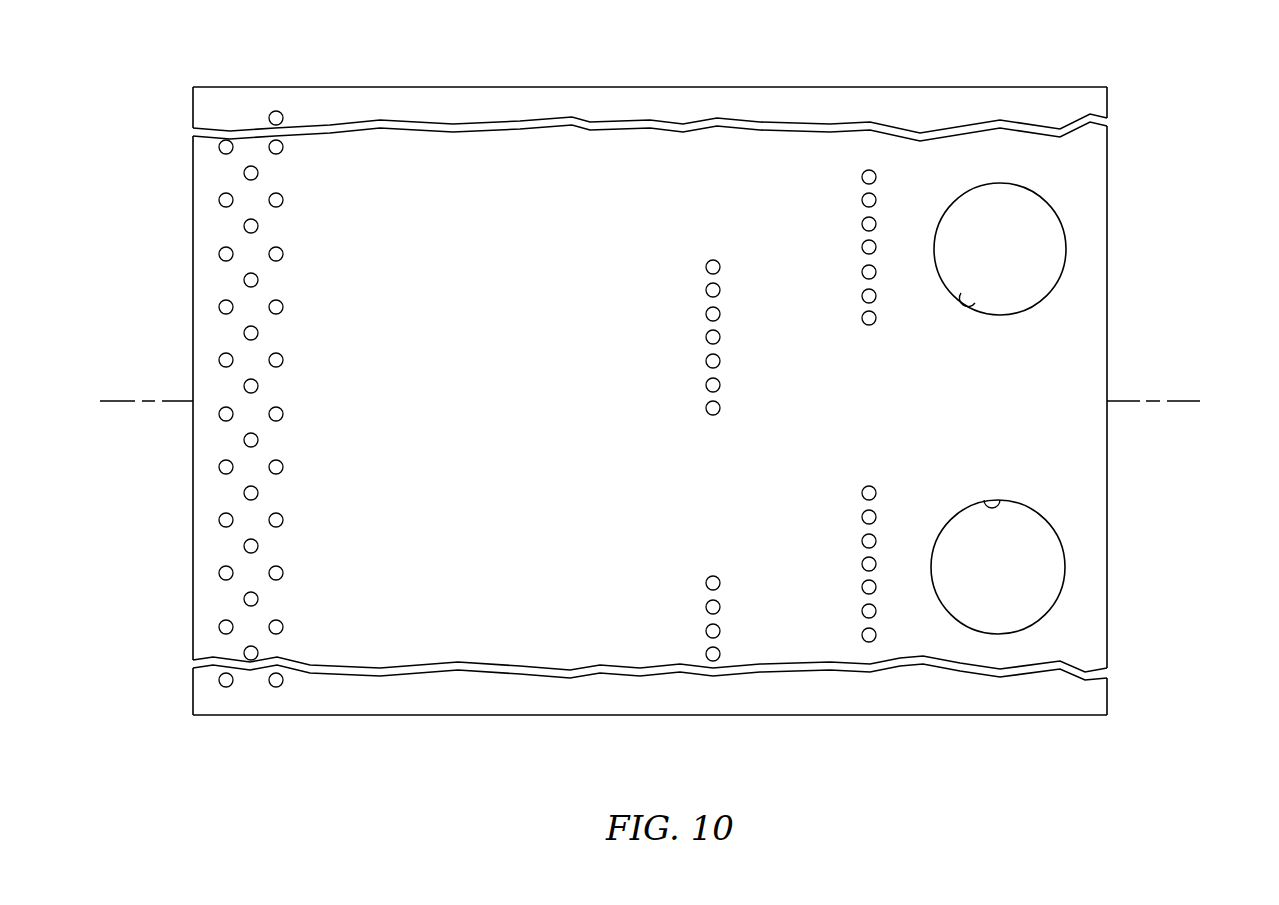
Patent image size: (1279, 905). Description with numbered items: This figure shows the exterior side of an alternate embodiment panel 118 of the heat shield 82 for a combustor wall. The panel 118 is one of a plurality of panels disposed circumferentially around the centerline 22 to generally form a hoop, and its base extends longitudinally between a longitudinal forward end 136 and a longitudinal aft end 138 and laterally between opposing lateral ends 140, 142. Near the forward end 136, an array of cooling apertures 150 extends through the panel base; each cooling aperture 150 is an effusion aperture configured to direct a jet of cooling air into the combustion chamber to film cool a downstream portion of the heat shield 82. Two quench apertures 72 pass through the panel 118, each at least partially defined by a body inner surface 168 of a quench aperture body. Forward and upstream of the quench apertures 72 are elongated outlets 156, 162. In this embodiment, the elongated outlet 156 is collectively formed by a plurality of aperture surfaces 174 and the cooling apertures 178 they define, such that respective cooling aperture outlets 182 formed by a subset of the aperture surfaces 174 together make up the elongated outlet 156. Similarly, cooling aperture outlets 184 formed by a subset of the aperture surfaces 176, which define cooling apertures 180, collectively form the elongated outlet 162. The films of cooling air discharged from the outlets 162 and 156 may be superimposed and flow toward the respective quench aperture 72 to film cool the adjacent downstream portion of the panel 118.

The heat shield 82 is at (671, 409).
The panel 118 is at (1147, 118).
The lateral end 142 is at (370, 87).
The lateral end 140 is at (362, 715).
The longitudinal forward end 136 is at (193, 227).
The longitudinal aft end 138 is at (1107, 225).
The cooling aperture 150 is at (258, 173).
The outlet 156 is at (853, 165).
The cooling aperture 178 is at (875, 197).
The aperture surface 174 is at (876, 248).
The cooling aperture outlet 182 is at (876, 272).
The outlet 162 is at (699, 257).
The cooling aperture outlet 184 is at (720, 289).
The aperture surface 176 is at (720, 314).
The cooling aperture 180 is at (722, 388).
The quench aperture 72 is at (998, 408).
The body inner surface 168 is at (970, 308).
The centerline 22 is at (1177, 400).